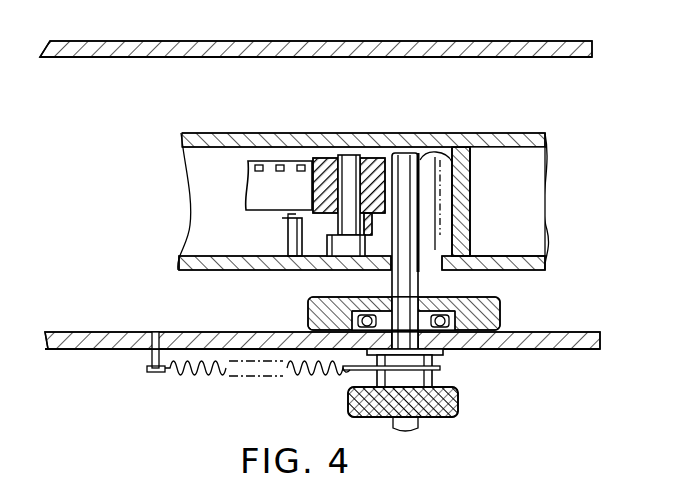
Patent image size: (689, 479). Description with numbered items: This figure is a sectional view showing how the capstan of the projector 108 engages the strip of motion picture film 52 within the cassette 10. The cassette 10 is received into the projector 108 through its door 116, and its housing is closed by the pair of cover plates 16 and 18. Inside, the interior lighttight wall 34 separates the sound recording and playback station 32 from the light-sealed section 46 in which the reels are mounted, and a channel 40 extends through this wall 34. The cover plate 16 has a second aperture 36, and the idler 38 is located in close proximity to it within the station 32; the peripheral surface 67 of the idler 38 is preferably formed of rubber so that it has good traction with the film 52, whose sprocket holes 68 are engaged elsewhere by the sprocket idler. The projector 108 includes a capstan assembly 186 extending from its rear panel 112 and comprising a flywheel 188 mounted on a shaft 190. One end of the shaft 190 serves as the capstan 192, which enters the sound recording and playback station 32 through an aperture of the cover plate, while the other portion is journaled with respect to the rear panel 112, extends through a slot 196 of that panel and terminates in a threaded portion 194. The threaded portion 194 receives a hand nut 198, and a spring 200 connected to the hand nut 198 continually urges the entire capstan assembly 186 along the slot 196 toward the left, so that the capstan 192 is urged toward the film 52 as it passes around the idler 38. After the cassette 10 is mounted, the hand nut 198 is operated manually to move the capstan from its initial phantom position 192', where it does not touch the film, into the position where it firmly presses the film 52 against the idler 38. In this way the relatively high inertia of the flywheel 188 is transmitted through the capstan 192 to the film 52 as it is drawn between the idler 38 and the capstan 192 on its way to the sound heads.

The projector 108 is at (472, 42).
The door 116 is at (357, 42).
The motion picture film cassette 10 is at (241, 133).
The cover plate 16 is at (232, 270).
The light-sealed section 46 is at (192, 223).
The interior lighttight wall 34 is at (462, 192).
The channel 40 is at (292, 214).
The strip of motion picture film 52 is at (276, 194).
The sprocket holes 68 is at (252, 168).
The peripheral surface 67 is at (318, 158).
The idler 38 is at (344, 155).
The sound recording and playback station 32 is at (318, 258).
The cover plate 18 is at (415, 150).
The capstan 192 is at (452, 180).
The spring finger deflected position 192' is at (483, 165).
The second aperture 36 is at (436, 253).
The capstan assembly 186 is at (434, 237).
The flywheel 188 is at (506, 312).
The shaft 190 is at (452, 306).
The rear panel 112 is at (546, 349).
The slot 196 is at (452, 348).
The hand nut 198 is at (458, 400).
The threaded portion 194 is at (418, 424).
The spring 200 is at (205, 378).